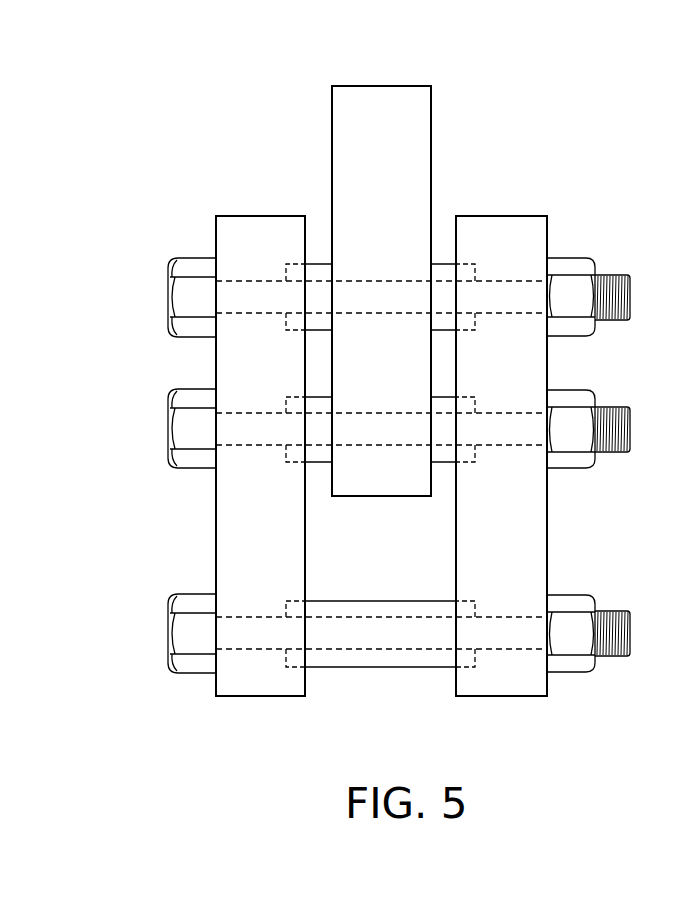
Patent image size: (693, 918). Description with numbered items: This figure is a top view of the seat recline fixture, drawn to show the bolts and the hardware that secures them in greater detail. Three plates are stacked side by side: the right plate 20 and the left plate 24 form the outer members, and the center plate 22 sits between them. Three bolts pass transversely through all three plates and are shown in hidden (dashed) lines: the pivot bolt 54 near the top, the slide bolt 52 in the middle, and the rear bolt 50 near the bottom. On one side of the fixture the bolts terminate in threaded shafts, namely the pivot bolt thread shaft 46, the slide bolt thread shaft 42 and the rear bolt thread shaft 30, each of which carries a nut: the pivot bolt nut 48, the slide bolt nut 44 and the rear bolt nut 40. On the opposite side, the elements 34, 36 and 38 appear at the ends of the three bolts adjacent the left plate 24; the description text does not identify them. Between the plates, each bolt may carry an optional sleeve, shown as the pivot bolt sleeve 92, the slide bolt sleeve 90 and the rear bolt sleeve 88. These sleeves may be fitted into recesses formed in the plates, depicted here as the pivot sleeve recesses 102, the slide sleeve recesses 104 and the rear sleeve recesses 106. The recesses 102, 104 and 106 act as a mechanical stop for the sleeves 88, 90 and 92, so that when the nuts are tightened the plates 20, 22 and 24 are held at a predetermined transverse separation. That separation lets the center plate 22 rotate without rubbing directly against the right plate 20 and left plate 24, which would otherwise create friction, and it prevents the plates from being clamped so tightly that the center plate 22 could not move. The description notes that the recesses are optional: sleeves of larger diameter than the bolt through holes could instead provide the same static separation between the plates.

The right plate 20 is at (504, 700).
The center plate 22 is at (374, 116).
The left plate 24 is at (271, 701).
The rear bolt thread shaft 30 is at (627, 636).
The bolt head 34 is at (190, 305).
The bolt head 36 is at (190, 635).
The bolt head 38 is at (190, 437).
The rear bolt nut 40 is at (576, 626).
The slide bolt thread shaft 42 is at (628, 431).
The slide bolt nut 44 is at (576, 428).
The pivot bolt thread shaft 46 is at (630, 296).
The pivot bolt nut 48 is at (576, 291).
The rear bolt 50 is at (400, 601).
The slide bolt 52 is at (372, 448).
The pivot bolt 54 is at (373, 279).
The rear bolt sleeve 88 is at (331, 671).
The slide bolt sleeve 90 is at (317, 470).
The pivot bolt sleeve 92 is at (437, 264).
The pivot sleeve recesses 102 is at (300, 256).
The slide sleeve recesses 104 is at (282, 387).
The rear sleeve recesses 106 is at (279, 656).